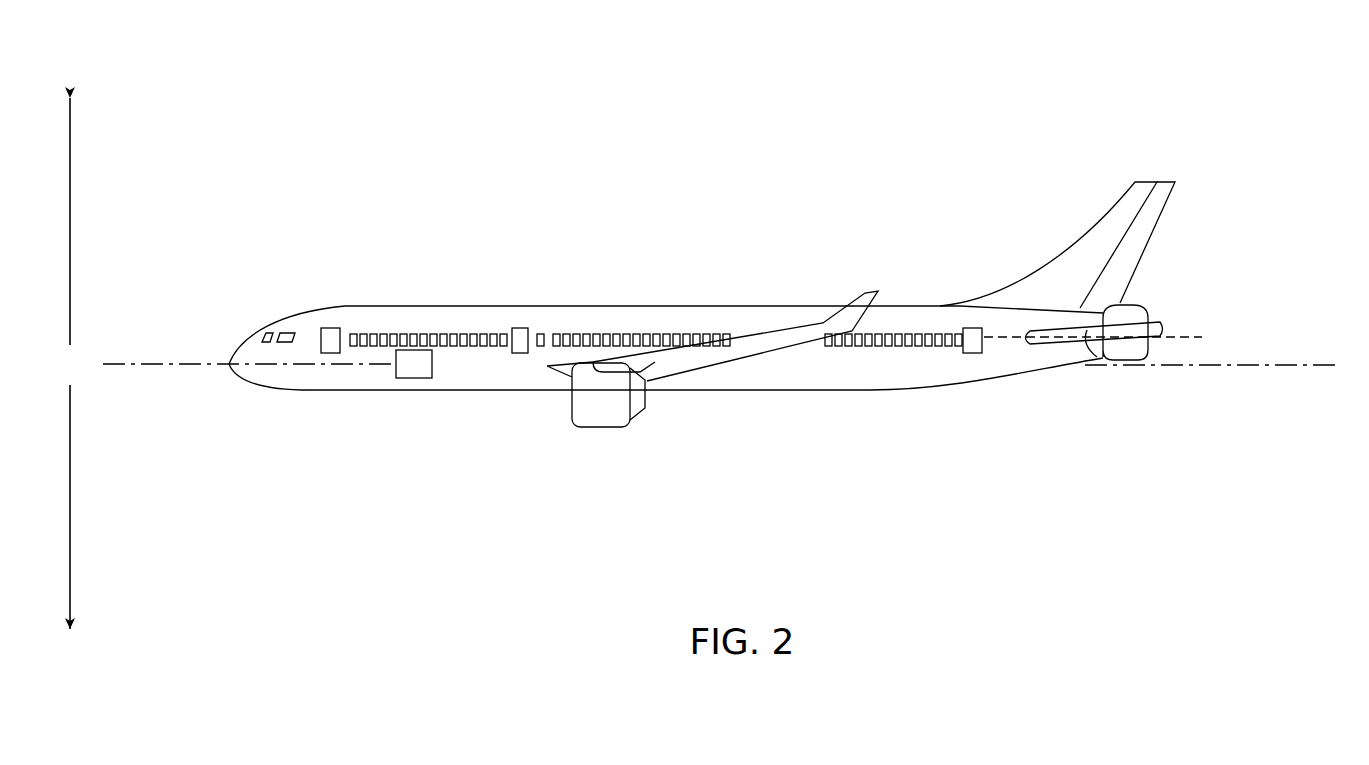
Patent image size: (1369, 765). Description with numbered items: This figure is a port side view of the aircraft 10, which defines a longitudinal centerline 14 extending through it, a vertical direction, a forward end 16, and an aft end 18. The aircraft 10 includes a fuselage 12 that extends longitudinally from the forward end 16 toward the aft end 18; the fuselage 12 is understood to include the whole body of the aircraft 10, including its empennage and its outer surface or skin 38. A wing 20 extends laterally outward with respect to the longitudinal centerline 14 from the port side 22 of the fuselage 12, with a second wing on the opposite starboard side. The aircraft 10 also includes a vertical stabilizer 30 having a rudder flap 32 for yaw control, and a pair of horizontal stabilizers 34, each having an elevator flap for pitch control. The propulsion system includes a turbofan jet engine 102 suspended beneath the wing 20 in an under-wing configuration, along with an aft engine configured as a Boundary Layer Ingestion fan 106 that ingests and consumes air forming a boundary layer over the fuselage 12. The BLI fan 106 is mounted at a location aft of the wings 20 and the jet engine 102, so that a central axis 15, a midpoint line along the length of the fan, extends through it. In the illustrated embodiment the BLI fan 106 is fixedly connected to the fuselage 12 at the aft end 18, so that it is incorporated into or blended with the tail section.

The aircraft 10 is at (329, 251).
The fuselage 12 is at (365, 381).
The longitudinal centerline 14 is at (120, 372).
The central axis 15 is at (1004, 331).
The forward end 16 is at (236, 386).
The aft end 18 is at (1053, 382).
The wings 20 is at (782, 336).
The port side 22 is at (865, 378).
The vertical stabilizer 30 is at (1100, 222).
The rudder flap 32 is at (1162, 218).
The horizontal stabilizers 34 is at (1088, 336).
The outer surface or skin 38 is at (578, 305).
The turbofan jet engine 102 is at (595, 419).
The Boundary Layer Ingestion (BLI) fan 106 is at (1149, 295).